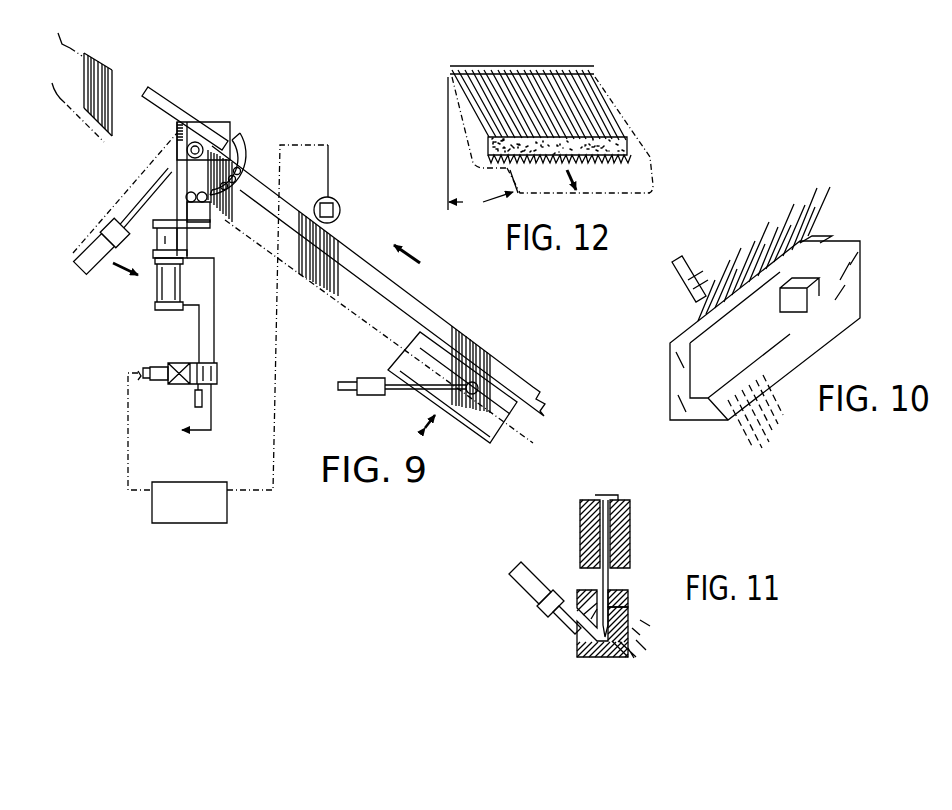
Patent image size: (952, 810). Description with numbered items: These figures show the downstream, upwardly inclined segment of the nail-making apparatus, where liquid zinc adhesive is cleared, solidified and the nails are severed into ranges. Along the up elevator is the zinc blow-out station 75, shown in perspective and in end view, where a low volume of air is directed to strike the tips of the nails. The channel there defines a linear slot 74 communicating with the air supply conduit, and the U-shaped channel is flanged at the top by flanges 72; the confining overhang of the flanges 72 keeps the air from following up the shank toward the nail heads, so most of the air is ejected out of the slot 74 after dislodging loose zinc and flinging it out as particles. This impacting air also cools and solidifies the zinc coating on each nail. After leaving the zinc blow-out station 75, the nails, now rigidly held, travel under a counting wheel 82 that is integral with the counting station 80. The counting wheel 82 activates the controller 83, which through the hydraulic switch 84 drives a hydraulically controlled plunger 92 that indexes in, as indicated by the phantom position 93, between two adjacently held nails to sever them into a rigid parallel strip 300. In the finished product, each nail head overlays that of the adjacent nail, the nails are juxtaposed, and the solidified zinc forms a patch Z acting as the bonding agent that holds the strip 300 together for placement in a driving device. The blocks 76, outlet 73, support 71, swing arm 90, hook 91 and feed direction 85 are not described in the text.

In FIG. 9, the strip 300 is at (108, 62).
In FIG. 12, the strip 300 is at (558, 98).
In FIG. 9, the swing arm 90 is at (199, 106).
In FIG. 9, the hook clamp 91 is at (229, 117).
In FIG. 9, the phantom position of plunger 93 is at (172, 204).
In FIG. 9, the hydraulically controlled plunger 92 is at (142, 292).
In FIG. 9, the hydraulic switch 84 is at (218, 360).
In FIG. 9, the controller 83 is at (204, 516).
In FIG. 9, the counting station 80 is at (349, 197).
In FIG. 9, the counting wheel 82 is at (341, 209).
In FIG. 9, the feed direction 85 is at (421, 256).
In FIG. 9, the clamp block 71 is at (548, 390).
In FIG. 10, the clamp block 71 is at (868, 266).
In FIG. 11, the clamp block 71 is at (589, 637).
In FIG. 9, the zinc blow-out station 75 is at (396, 403).
In FIG. 12, the patch Z is at (622, 140).
In FIG. 10, the flanges 72 is at (816, 236).
In FIG. 11, the guide blocks 76 is at (587, 515).
In FIG. 11, the linear slot 74 is at (627, 613).
In FIG. 11, the outlet 73 is at (612, 642).